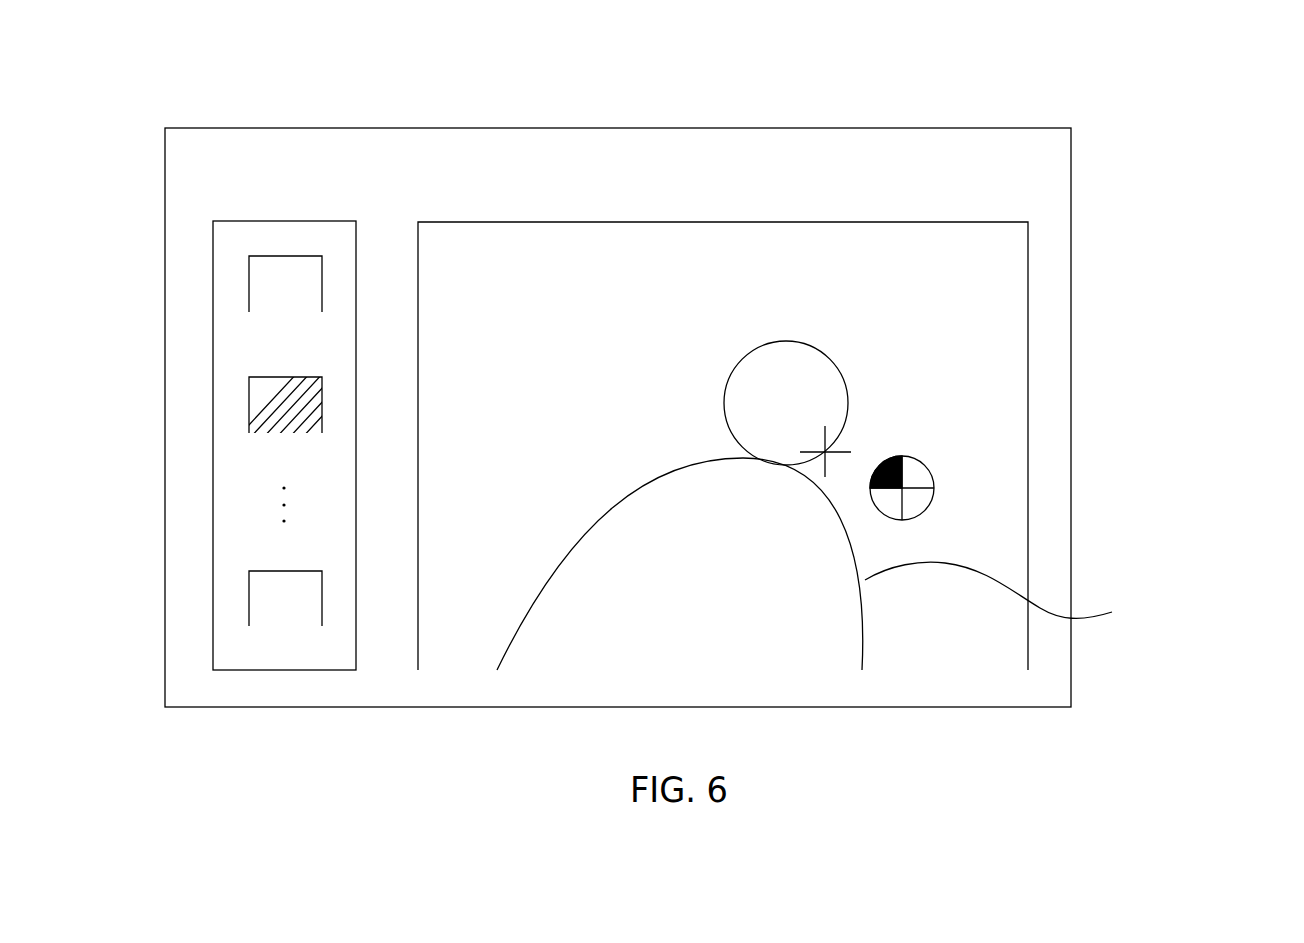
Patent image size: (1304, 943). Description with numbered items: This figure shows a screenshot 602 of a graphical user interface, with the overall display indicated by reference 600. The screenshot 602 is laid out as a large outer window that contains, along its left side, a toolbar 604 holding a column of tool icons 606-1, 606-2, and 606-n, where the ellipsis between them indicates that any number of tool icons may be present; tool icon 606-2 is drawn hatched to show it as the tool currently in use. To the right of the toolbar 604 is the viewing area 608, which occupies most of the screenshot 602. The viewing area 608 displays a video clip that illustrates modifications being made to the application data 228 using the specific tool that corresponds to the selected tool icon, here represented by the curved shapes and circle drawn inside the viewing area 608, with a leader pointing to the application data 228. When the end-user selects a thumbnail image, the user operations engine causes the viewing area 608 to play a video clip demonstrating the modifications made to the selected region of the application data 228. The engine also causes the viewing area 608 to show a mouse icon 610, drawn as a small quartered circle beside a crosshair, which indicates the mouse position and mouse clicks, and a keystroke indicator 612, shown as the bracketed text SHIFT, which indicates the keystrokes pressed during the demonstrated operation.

The user interface 600 is at (1206, 78).
The screenshot 602 is at (985, 128).
The toolbar 604 is at (285, 221).
The tool icon 606-1 is at (249, 287).
The tool icon 606-2 is at (249, 409).
The tool icon 606-n is at (249, 604).
The viewing area 608 is at (935, 222).
The mouse icon 610 is at (932, 472).
The keystroke indicator 612 is at (1000, 347).
The application data 228 is at (1059, 581).